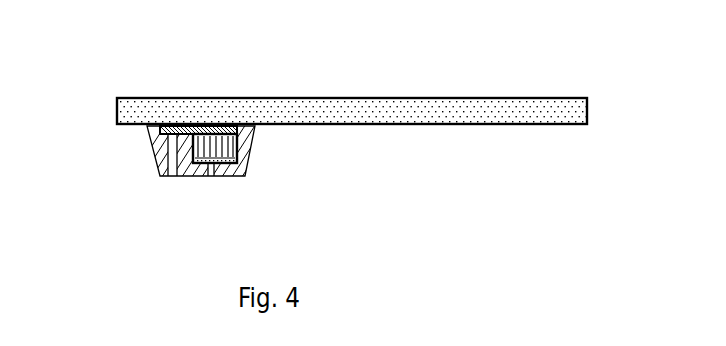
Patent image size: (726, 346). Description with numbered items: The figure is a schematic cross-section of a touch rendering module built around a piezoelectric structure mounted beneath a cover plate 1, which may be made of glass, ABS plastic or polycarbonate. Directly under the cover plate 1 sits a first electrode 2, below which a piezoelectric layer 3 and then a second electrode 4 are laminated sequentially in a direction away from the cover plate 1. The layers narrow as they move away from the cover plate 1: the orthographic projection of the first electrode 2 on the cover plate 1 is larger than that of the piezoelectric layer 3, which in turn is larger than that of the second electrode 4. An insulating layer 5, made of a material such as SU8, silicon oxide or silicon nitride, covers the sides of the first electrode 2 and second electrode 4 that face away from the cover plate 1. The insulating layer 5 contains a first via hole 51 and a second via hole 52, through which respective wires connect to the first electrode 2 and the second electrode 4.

The cover plate 1 is at (362, 100).
The first electrode 2 is at (185, 122).
The piezoelectric layer 3 is at (230, 147).
The second electrode 4 is at (247, 165).
The insulating layer 5 is at (153, 148).
The first via hole 51 is at (173, 177).
The second via hole 52 is at (208, 177).